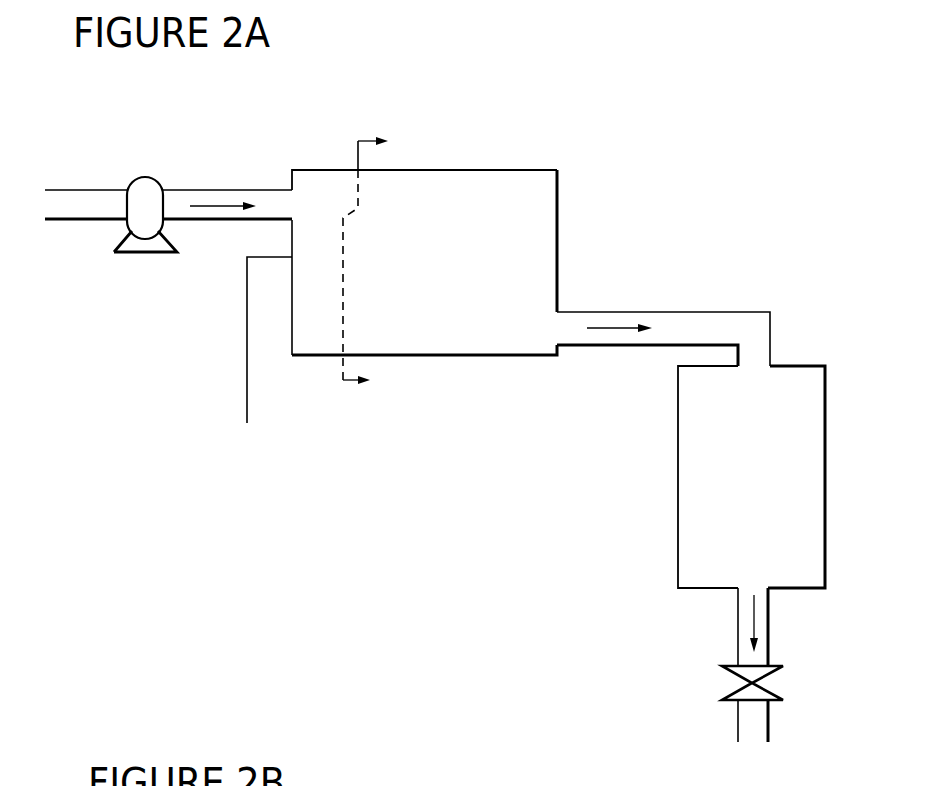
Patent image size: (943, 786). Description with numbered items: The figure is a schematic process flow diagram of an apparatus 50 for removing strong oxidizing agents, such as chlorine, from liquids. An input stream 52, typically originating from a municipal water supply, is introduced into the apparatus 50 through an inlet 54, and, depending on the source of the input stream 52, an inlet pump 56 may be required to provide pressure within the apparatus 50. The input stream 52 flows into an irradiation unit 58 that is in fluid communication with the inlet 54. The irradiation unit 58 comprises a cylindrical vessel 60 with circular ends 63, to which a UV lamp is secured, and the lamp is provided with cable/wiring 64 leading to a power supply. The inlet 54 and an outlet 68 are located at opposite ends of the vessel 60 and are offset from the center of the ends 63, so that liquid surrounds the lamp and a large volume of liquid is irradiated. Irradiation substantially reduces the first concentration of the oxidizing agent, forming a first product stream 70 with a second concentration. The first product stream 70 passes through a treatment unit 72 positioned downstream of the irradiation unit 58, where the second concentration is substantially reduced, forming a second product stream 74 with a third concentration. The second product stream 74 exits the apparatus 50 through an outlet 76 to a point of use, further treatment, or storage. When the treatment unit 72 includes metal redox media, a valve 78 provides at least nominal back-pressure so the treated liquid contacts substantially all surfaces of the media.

The apparatus 50 is at (645, 208).
The input stream 52 is at (213, 205).
The inlet 54 is at (291, 184).
The inlet pump 56 is at (152, 177).
The irradiation unit 58 is at (478, 381).
The cylindrical vessel 60 is at (518, 169).
The circular ends 63 is at (560, 203).
The cable/wiring 64 is at (244, 345).
The outlet 68 is at (559, 311).
The first product stream 70 is at (615, 328).
The treatment unit 72 is at (825, 398).
The second product stream 74 is at (757, 600).
The outlet 76 is at (769, 742).
The valve 78 is at (785, 683).